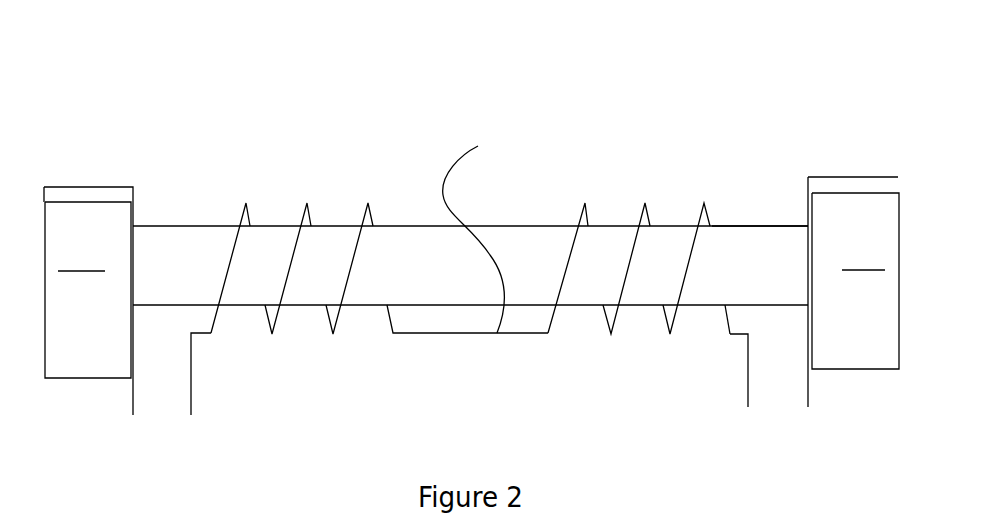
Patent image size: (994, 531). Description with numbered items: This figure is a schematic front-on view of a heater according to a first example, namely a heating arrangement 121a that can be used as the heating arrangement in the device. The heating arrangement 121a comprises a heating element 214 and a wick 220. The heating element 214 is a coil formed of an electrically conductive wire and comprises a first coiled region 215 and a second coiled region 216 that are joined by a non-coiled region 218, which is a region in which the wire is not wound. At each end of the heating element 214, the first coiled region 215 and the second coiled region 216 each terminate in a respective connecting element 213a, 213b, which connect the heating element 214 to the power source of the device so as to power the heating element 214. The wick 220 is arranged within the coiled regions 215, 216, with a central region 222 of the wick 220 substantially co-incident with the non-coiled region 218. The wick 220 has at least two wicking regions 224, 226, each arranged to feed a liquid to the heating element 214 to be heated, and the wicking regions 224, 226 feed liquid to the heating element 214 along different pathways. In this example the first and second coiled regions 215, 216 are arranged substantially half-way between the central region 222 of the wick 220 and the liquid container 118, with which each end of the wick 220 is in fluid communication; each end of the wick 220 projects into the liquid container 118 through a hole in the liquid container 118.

The liquid container 118 is at (471, 296).
The heating arrangement 121a is at (778, 93).
The connecting element 213a is at (192, 375).
The connecting element 213b is at (747, 368).
The heating element 214 is at (402, 100).
The first coiled region 215 is at (377, 217).
The second coiled region 216 is at (583, 217).
The non-coiled region 218 is at (474, 224).
The wick 220 is at (768, 226).
The central region 222 is at (440, 277).
The wicking region 224 is at (153, 226).
The wicking region 226 is at (745, 226).